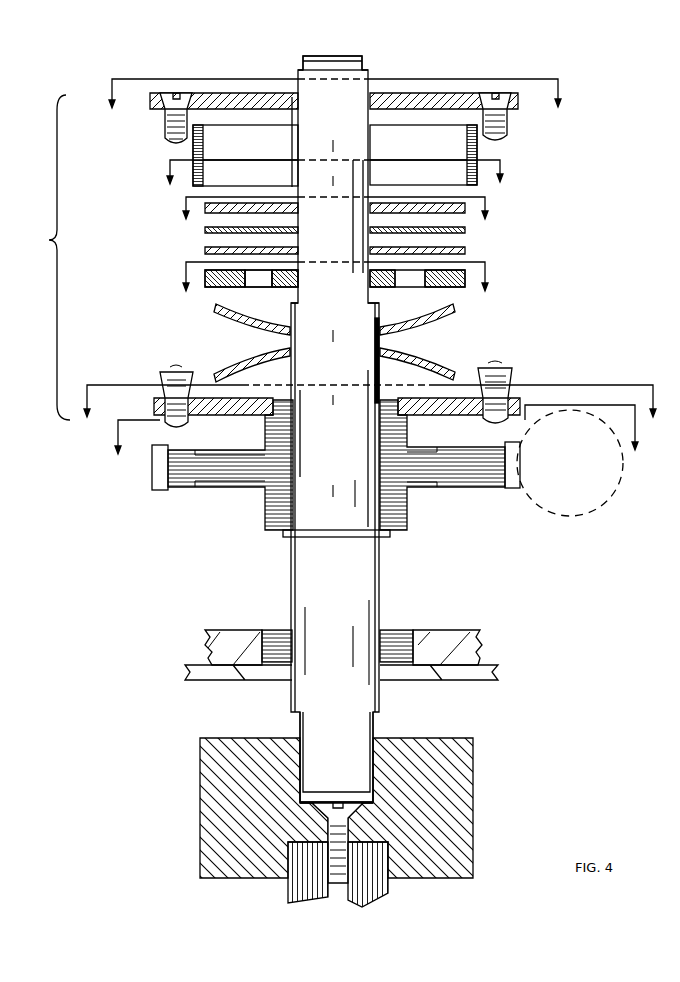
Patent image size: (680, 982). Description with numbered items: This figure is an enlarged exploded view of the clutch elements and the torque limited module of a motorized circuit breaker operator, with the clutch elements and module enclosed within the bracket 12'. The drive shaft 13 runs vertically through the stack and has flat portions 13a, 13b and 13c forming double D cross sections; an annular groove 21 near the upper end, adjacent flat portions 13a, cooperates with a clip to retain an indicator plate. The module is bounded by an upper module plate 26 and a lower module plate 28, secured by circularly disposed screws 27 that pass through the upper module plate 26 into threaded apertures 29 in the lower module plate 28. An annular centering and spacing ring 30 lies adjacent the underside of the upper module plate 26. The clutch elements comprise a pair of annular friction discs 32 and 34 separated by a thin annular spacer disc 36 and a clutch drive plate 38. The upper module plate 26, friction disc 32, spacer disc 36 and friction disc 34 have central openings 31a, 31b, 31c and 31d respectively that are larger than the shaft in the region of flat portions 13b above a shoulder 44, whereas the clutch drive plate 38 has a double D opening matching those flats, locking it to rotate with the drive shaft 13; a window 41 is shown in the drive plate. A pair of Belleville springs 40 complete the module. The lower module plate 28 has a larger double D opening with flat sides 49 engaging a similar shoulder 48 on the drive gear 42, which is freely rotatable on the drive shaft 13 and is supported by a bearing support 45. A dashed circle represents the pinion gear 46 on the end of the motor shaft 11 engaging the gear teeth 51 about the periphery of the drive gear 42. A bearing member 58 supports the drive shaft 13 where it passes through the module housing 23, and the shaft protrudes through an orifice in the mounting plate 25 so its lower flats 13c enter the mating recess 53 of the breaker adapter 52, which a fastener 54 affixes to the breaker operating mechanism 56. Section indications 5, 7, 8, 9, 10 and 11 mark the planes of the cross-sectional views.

The bracket 12' is at (47, 257).
The drive shaft 13 is at (385, 345).
The flat portions 13a is at (300, 69).
The flat portions 13b is at (370, 300).
The flat side portions 13c is at (352, 746).
The annular groove 21 is at (360, 60).
The module housing 23 is at (482, 643).
The mounting plate 25 is at (210, 680).
The upper module plate 26 is at (220, 94).
The screws 27 is at (163, 132).
The lower module plate 28 is at (510, 396).
The threaded apertures 29 is at (163, 416).
The centering and spacing ring 30 is at (477, 148).
The central opening 31a is at (298, 98).
The central opening 31b is at (298, 203).
The central opening 31c is at (298, 230).
The central opening 31d is at (298, 250).
The friction disc 32 is at (467, 207).
The friction disc 34 is at (205, 250).
The spacer disc 36 is at (465, 240).
The clutch drive plate 38 is at (205, 278).
The Belleville springs 40 is at (250, 356).
The rotor window 41 is at (250, 287).
The drive gear 42 is at (437, 484).
The shoulder 44 is at (380, 303).
The bearing support 45 is at (387, 536).
The pinion gear 46 is at (572, 517).
The shoulder 48 is at (300, 420).
The flat sides 49 is at (300, 396).
The gear teeth 51 is at (160, 491).
The breaker adapter 52 is at (476, 766).
The mating recess 53 is at (380, 748).
The fastener 54 is at (385, 818).
The breaker operating mechanism 56 is at (390, 886).
The bearing member 58 is at (277, 630).
The section line 5- 5 is at (375, 438).
The section line 7- 7 is at (334, 104).
The section line 8- 8 is at (334, 181).
The section line 9- 9 is at (334, 218).
The section line 10- 10 is at (335, 285).
The motor shaft 11 is at (372, 412).